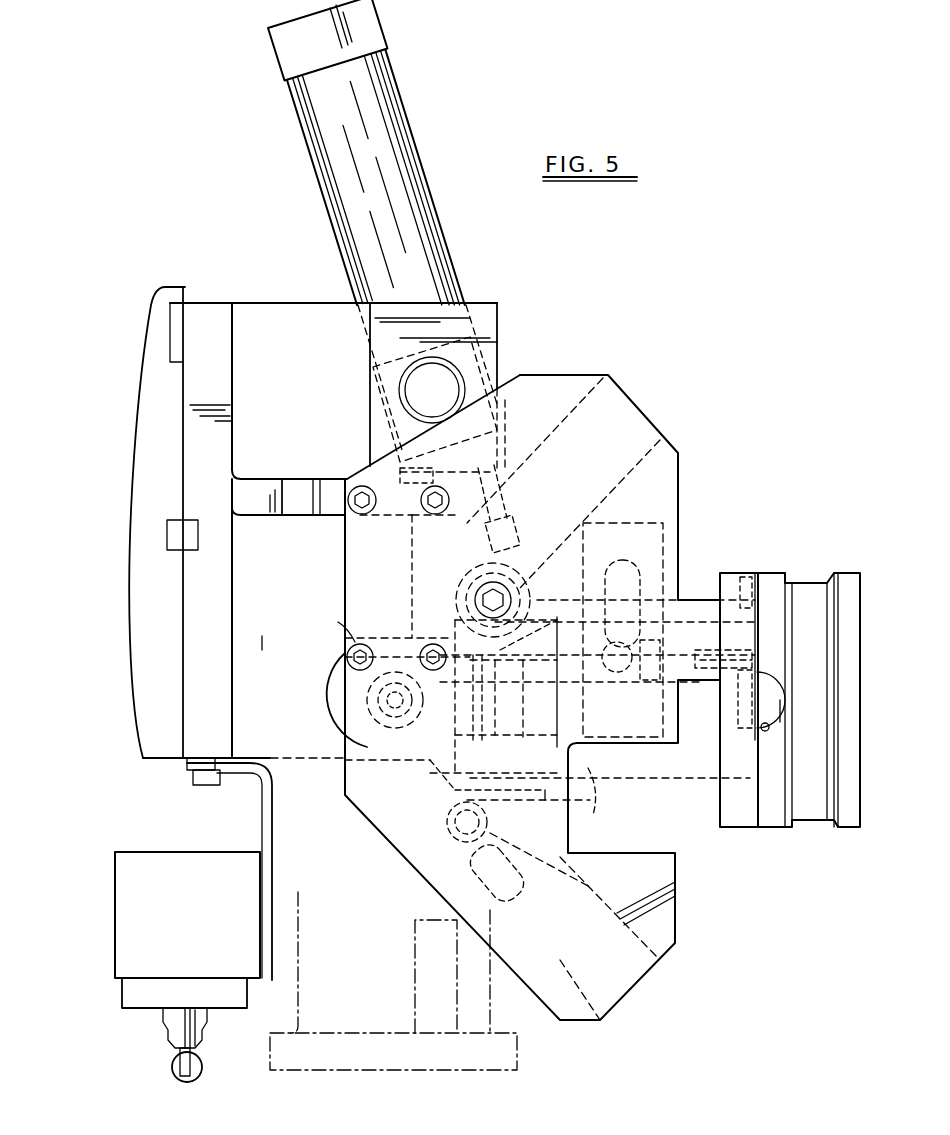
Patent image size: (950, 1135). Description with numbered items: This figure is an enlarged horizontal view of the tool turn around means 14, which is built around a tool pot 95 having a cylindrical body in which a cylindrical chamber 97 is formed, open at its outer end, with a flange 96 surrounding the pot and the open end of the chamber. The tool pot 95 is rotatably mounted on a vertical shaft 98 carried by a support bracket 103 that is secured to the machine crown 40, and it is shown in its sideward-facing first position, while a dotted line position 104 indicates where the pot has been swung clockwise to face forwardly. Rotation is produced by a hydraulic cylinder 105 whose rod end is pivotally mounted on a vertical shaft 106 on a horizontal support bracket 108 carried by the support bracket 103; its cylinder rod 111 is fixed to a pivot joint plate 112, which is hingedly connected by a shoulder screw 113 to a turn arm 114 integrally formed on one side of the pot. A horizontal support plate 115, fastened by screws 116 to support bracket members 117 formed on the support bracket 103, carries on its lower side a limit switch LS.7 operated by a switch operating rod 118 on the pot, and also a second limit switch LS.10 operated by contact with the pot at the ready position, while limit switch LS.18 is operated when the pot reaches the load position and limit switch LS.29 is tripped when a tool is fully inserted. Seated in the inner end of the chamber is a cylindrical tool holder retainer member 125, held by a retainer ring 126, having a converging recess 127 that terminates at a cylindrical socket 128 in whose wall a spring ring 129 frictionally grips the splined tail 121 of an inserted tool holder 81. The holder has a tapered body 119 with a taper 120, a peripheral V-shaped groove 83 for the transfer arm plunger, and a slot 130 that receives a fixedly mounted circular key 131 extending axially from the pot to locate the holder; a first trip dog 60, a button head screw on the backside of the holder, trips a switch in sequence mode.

The tool turn around means 14 is at (690, 510).
The machine crown 40 is at (147, 470).
The first trip dog 60 is at (757, 570).
The tool holder 81 is at (851, 832).
The peripheral V-shaped groove 83 is at (791, 830).
The tool pot 95 is at (660, 790).
The flange 96 is at (740, 832).
The cylindrical chamber 97 is at (590, 815).
The vertical shaft 98 is at (372, 700).
The support bracket 103 is at (215, 312).
The dotted line position 104 is at (355, 1072).
The hydraulic cylinder 105 is at (432, 190).
The vertical shaft 106 is at (405, 388).
The horizontal support bracket 108 is at (488, 356).
The cylinder rod 111 is at (512, 506).
The pivot joint plate 112 is at (506, 542).
The shoulder screw 113 is at (515, 598).
The turn arm 114 is at (428, 650).
The horizontal support plate 115 is at (668, 545).
The screws 116 is at (358, 514).
The support bracket members 117 is at (262, 487).
The switch operating rod 118 is at (648, 686).
The tapered body 119 is at (633, 752).
The taper 120 is at (655, 770).
The splined tail 121 is at (430, 735).
The tool holder retainer member 125 is at (445, 798).
The retainer ring 126 is at (545, 795).
The converging recess 127 is at (522, 780).
The cylindrical socket 128 is at (440, 770).
The spring ring 129 is at (492, 805).
The slot 130 is at (772, 740).
The circular key 131 is at (772, 680).
The limit switch LS.7 is at (660, 575).
The limit switch LS.10 is at (522, 897).
The limit switch LS.18 is at (450, 583).
The limit switch LS.29 is at (128, 941).